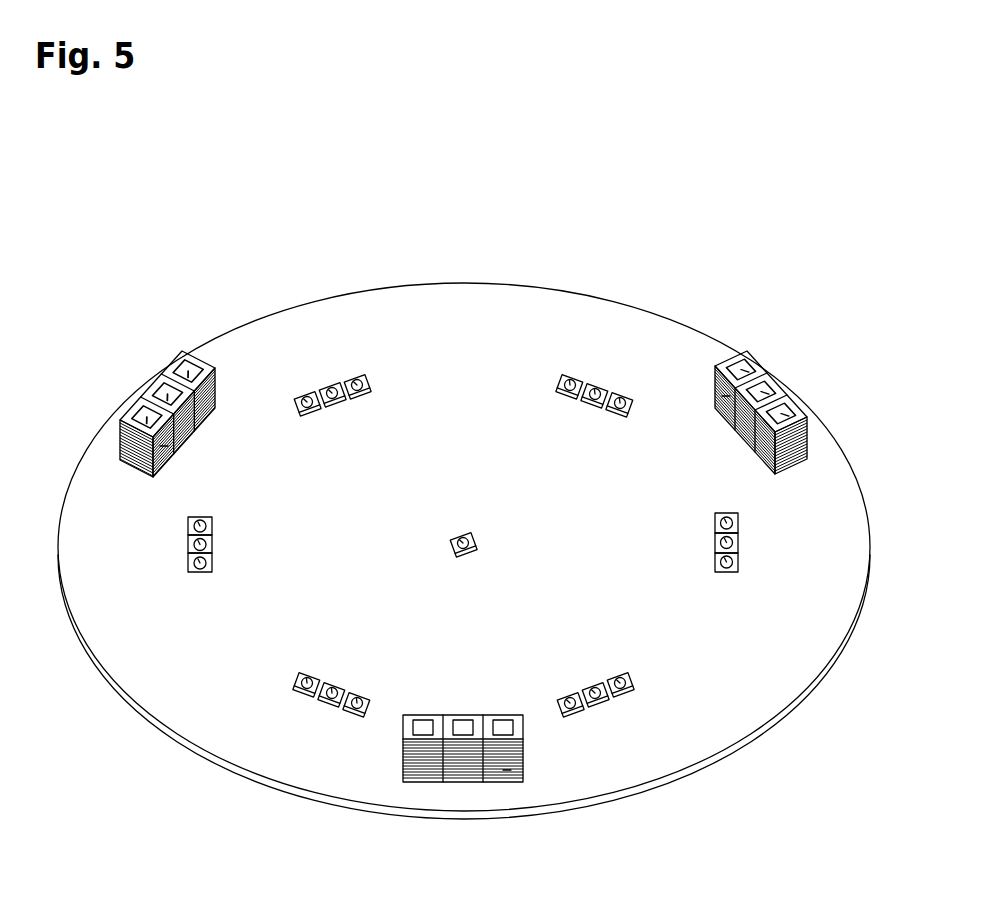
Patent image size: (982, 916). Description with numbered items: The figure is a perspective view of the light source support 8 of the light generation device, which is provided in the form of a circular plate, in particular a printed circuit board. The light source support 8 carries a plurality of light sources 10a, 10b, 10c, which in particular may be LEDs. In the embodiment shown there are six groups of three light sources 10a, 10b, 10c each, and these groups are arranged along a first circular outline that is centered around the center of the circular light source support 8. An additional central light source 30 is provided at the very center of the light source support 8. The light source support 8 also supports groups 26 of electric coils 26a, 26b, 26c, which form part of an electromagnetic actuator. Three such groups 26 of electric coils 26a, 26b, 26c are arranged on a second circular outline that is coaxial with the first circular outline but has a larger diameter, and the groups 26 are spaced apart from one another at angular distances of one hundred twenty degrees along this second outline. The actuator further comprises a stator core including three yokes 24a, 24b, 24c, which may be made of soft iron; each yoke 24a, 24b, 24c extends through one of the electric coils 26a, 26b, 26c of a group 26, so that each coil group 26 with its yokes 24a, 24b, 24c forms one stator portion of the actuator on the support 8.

The light source support 8 is at (802, 668).
The light source 10a is at (355, 378).
The light source 10b is at (330, 385).
The light source 10c is at (302, 396).
The yoke 24a is at (173, 362).
The yoke 24b is at (153, 382).
The yoke 24c is at (132, 404).
The group of electric coils 26 is at (105, 464).
The electric coil 26a is at (207, 396).
The electric coil 26b is at (183, 423).
The electric coil 26c is at (167, 447).
The central light source 30 is at (463, 530).